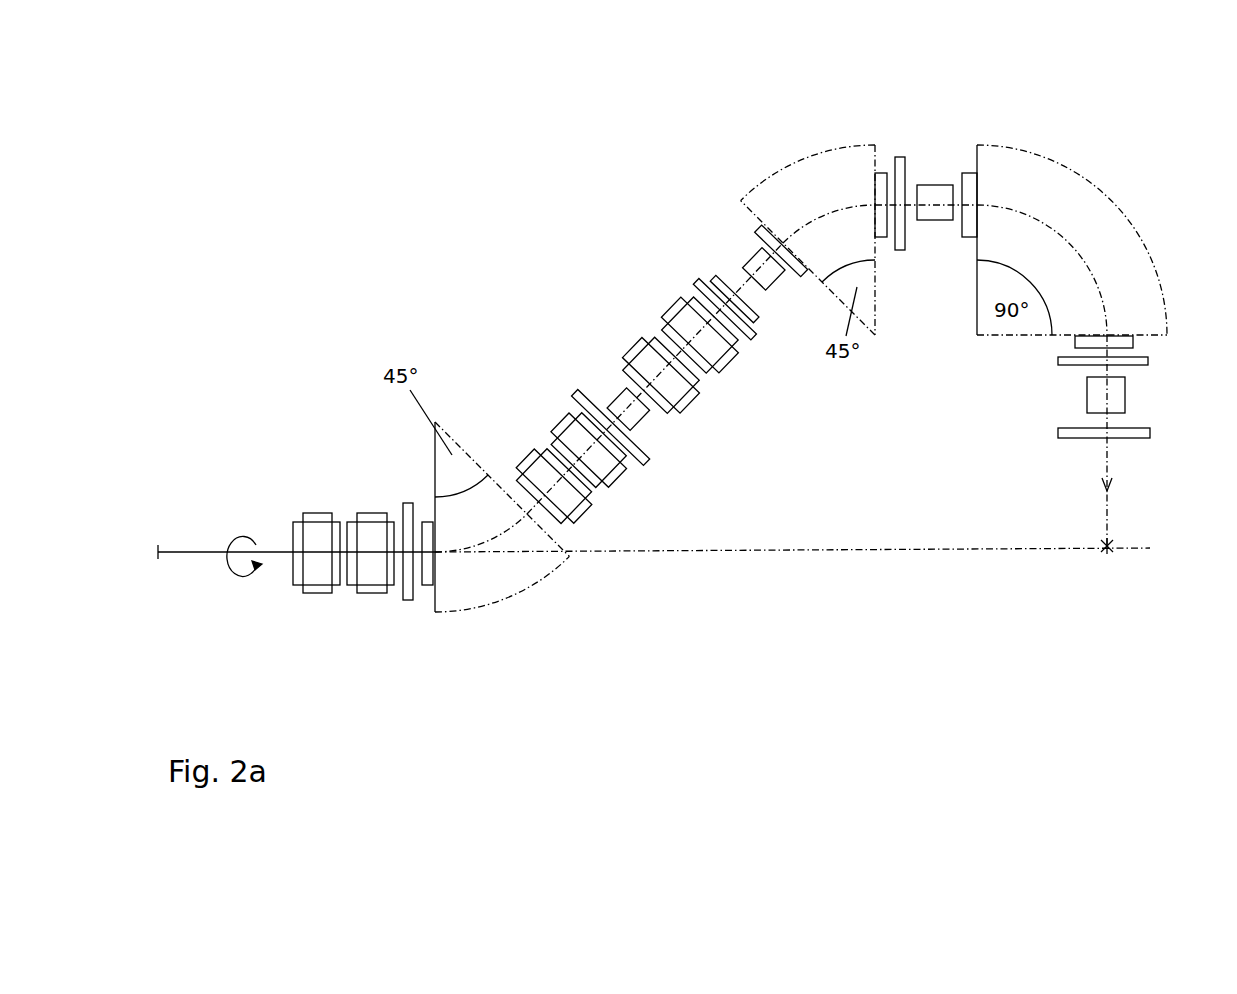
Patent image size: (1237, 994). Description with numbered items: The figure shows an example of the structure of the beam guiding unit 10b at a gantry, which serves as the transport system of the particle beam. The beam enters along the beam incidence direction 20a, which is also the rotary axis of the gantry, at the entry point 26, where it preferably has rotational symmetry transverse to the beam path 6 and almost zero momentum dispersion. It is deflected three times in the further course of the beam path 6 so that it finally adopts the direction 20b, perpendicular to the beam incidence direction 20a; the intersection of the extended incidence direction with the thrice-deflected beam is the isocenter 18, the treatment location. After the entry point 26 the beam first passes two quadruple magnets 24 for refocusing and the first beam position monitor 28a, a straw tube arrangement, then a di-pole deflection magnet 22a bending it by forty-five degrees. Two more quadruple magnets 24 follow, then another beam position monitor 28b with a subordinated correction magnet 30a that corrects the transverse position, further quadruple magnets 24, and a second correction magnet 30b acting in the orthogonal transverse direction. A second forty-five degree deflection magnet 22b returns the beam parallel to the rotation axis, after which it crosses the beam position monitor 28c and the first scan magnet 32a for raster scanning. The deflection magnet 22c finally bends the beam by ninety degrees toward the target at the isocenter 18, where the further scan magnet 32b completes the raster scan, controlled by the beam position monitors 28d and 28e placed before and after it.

The beam guiding unit 10b is at (647, 128).
The beam path 6 is at (275, 560).
The isocenter 18 is at (1102, 558).
The beam incidence direction 20a is at (270, 437).
The direction 20b is at (1042, 438).
The deflection magnet 22a is at (560, 556).
The deflection magnet 22b is at (818, 153).
The deflection magnet 22c is at (1025, 150).
The quadruple magnets 24 is at (368, 592).
The entry point 26 is at (156, 562).
The beam position monitor 28a is at (407, 505).
The beam position monitor 28b is at (641, 457).
The beam position monitor 28c is at (901, 251).
The beam position monitor 28d is at (1150, 359).
The beam position monitor 28e is at (1150, 433).
The correction magnet 30a is at (607, 400).
The correction magnet 30b is at (746, 262).
The scan magnet 32a is at (934, 185).
The scan magnet 32b is at (1087, 400).